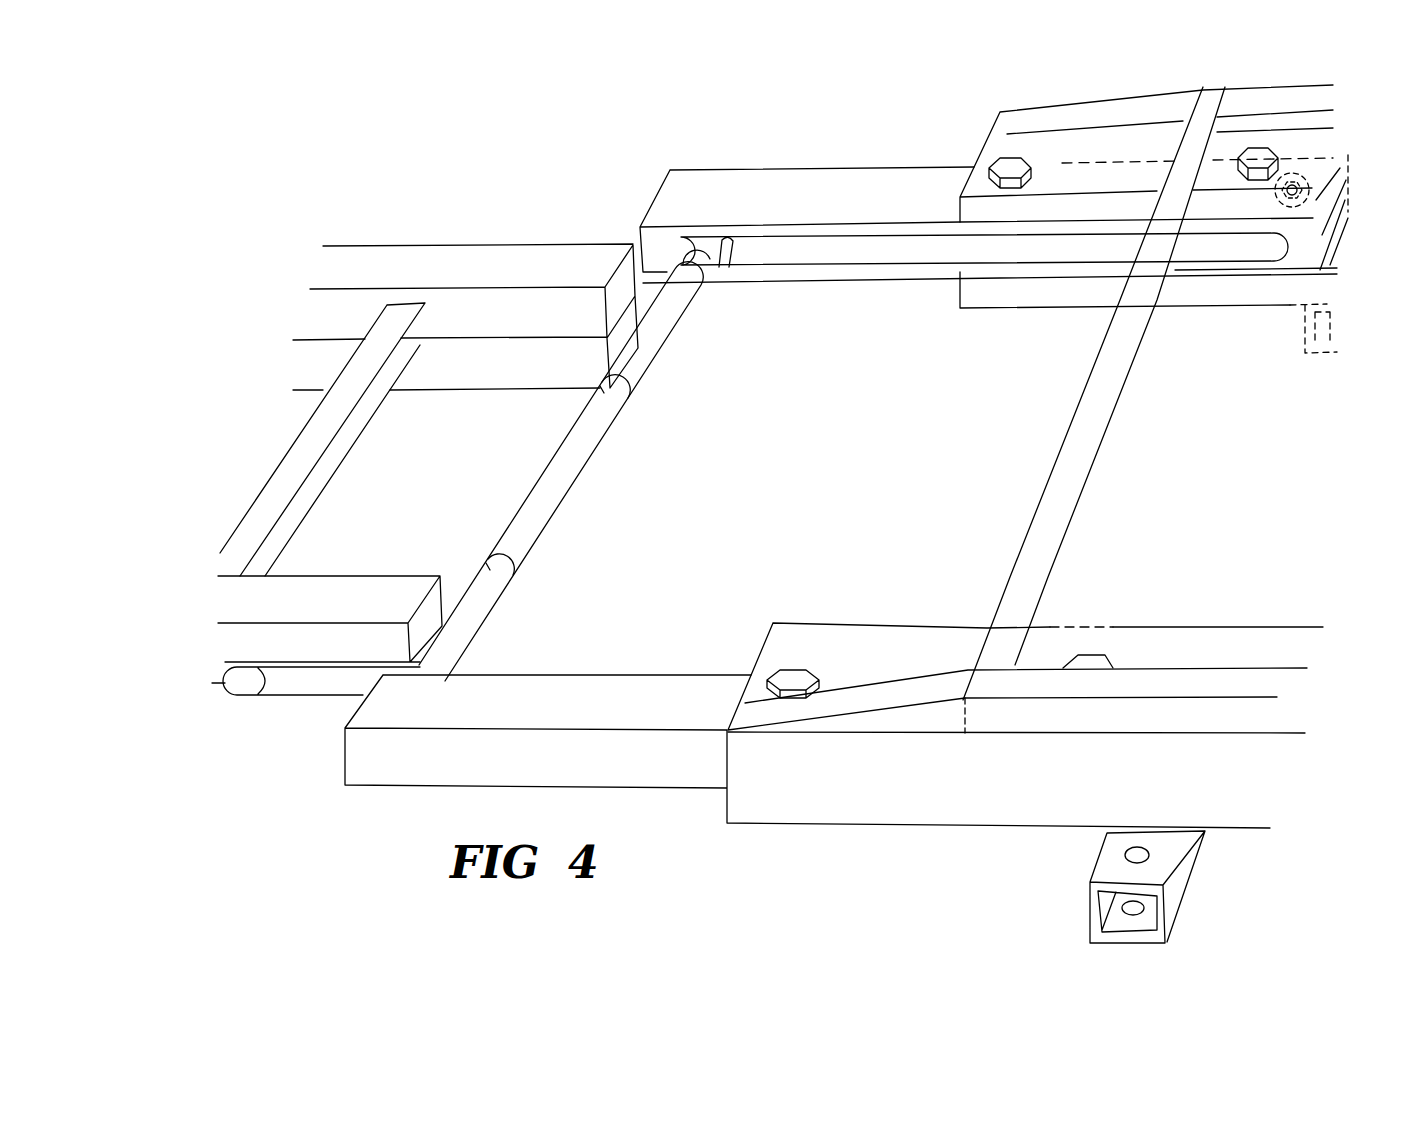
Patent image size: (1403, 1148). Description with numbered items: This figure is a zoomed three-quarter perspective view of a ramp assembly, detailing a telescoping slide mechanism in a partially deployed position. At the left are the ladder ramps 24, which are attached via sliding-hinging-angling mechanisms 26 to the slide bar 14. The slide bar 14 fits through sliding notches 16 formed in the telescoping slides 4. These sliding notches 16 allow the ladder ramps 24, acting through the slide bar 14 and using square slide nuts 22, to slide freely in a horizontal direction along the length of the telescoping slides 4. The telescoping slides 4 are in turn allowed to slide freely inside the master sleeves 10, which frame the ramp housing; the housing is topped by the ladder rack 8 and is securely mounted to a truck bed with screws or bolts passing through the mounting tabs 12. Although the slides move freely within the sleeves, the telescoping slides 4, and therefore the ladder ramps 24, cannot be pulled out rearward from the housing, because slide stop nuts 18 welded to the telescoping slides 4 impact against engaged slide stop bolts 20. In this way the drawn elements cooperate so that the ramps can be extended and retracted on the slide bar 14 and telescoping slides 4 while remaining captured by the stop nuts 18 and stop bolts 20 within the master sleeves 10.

The telescoping slides 4 is at (834, 299).
The ladder rack 8 is at (1082, 451).
The master sleeves 10 is at (908, 790).
The mounting tabs 12 is at (1180, 877).
The slide bar 14 is at (582, 478).
The sliding notches 16 is at (872, 253).
The slide stop nuts 18 is at (1295, 210).
The slide stop bolts 20 is at (993, 157).
The square slide nuts 22 is at (733, 249).
The ladder ramps 24 is at (433, 260).
The sliding-hinging-angling mechanisms 26 is at (683, 350).